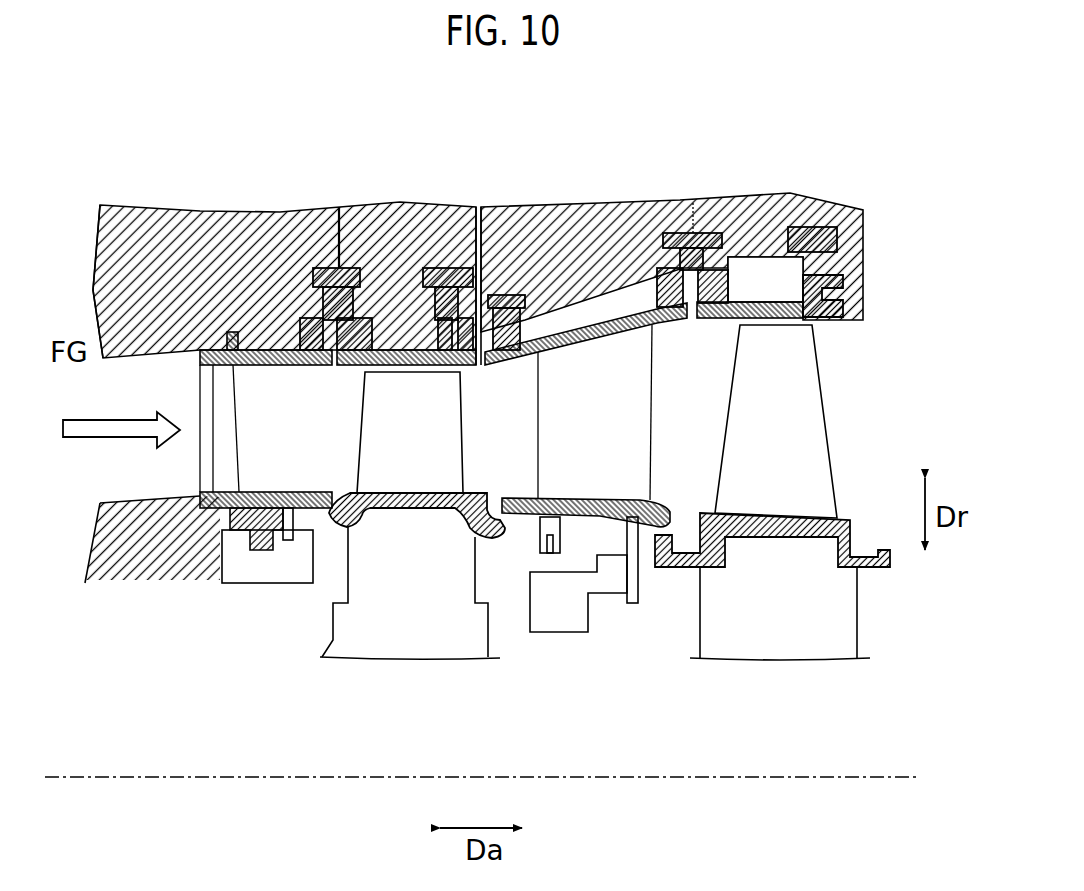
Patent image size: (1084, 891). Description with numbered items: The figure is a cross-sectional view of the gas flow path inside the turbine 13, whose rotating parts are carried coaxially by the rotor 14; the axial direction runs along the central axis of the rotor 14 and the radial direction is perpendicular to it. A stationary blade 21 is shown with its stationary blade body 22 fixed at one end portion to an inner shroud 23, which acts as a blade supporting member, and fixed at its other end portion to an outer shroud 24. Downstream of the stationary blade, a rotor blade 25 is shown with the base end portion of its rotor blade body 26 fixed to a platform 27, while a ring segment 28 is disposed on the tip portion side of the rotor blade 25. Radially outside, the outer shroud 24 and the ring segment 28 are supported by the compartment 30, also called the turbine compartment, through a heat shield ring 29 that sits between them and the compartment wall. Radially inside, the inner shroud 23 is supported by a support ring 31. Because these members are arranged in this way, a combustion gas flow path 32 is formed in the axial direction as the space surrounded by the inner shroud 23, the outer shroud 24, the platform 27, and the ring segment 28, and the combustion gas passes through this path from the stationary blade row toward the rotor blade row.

The turbine 13 is at (724, 132).
The rotor 14 is at (852, 775).
The stationary blade 21 is at (226, 410).
The stationary blade body 22 is at (265, 388).
The inner shroud 23 is at (233, 510).
The outer shroud 24 is at (303, 350).
The rotor blade 25 is at (350, 434).
The rotor blade body 26 is at (433, 477).
The platform 27 is at (383, 510).
The ring segment 28 is at (400, 348).
The heat shield ring 29 is at (334, 278).
The compartment 30 is at (343, 262).
The support ring 31 is at (267, 565).
The combustion gas flow path 32 is at (140, 385).